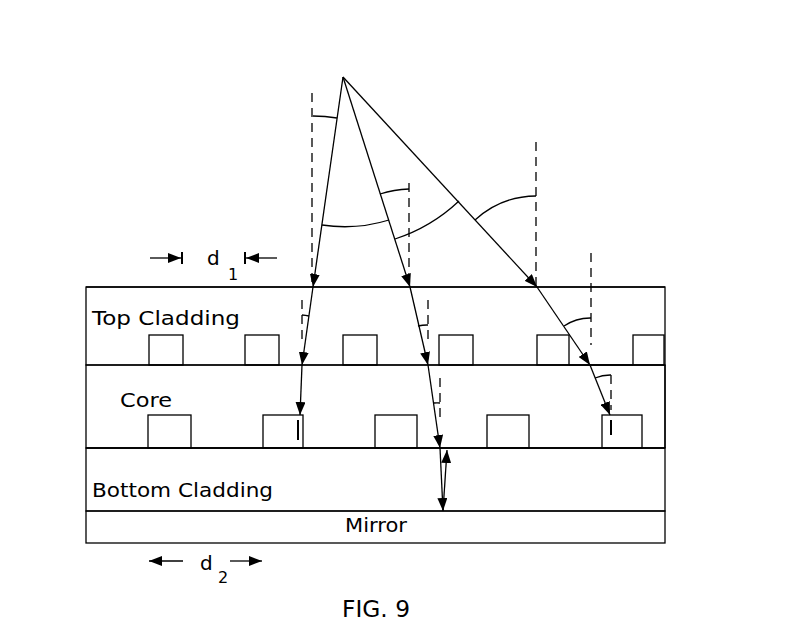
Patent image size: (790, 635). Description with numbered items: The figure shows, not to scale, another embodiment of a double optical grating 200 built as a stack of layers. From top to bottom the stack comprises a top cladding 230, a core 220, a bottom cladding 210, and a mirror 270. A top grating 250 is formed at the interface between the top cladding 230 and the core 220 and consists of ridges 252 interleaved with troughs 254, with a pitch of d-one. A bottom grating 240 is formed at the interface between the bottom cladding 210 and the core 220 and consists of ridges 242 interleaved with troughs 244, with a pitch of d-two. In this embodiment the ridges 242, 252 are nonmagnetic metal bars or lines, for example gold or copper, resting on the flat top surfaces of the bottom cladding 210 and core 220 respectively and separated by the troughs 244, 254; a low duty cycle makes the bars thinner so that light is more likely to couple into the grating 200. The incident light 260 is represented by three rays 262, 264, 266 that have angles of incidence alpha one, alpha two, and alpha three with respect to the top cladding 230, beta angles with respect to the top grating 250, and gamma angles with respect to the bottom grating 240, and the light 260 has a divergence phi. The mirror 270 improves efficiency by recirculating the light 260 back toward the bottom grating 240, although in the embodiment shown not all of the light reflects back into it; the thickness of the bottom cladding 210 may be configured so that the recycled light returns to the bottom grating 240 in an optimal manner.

The double optical grating 200 is at (397, 40).
The bottom cladding 210 is at (665, 487).
The core 220 is at (665, 413).
The top cladding 230 is at (598, 287).
The bottom grating 240 is at (78, 433).
The ridges 242 is at (617, 457).
The troughs 244 is at (557, 453).
The top grating 250 is at (78, 352).
The ridges 252 is at (143, 350).
The troughs 254 is at (617, 362).
The light 260 is at (420, 294).
The ray 262 is at (363, 140).
The ray 264 is at (440, 178).
The ray 266 is at (327, 188).
The mirror 270 is at (85, 527).